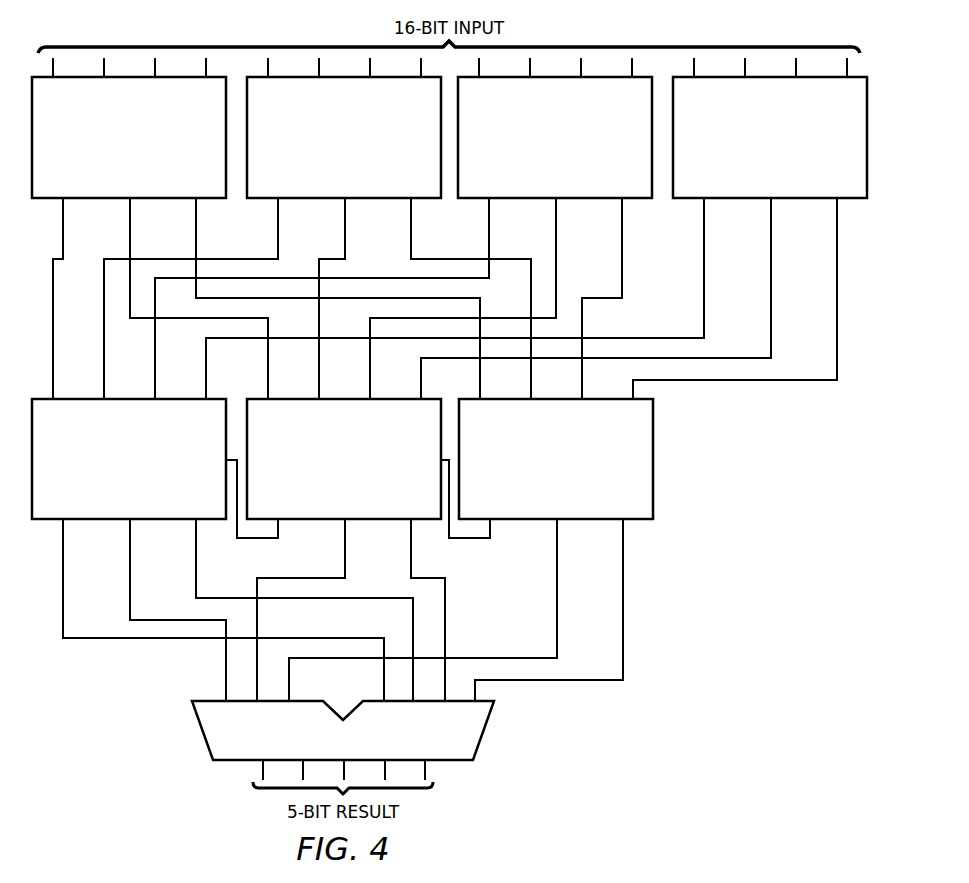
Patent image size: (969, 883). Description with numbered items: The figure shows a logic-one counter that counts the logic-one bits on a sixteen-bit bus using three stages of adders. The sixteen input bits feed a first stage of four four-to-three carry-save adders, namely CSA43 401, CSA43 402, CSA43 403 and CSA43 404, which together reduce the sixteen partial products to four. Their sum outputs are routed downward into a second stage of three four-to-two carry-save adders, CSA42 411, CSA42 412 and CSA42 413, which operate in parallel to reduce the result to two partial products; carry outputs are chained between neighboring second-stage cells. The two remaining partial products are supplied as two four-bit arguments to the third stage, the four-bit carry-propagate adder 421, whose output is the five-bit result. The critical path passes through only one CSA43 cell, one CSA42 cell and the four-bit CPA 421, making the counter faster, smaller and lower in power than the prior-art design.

The CSA43 401 is at (110, 199).
The CSA43 402 is at (324, 199).
The CSA43 403 is at (575, 199).
The CSA43 404 is at (790, 199).
The CSA42 411 is at (110, 520).
The CSA42 412 is at (324, 520).
The CSA42 413 is at (575, 520).
The 4-bit carry-propagate adder 421 is at (488, 728).